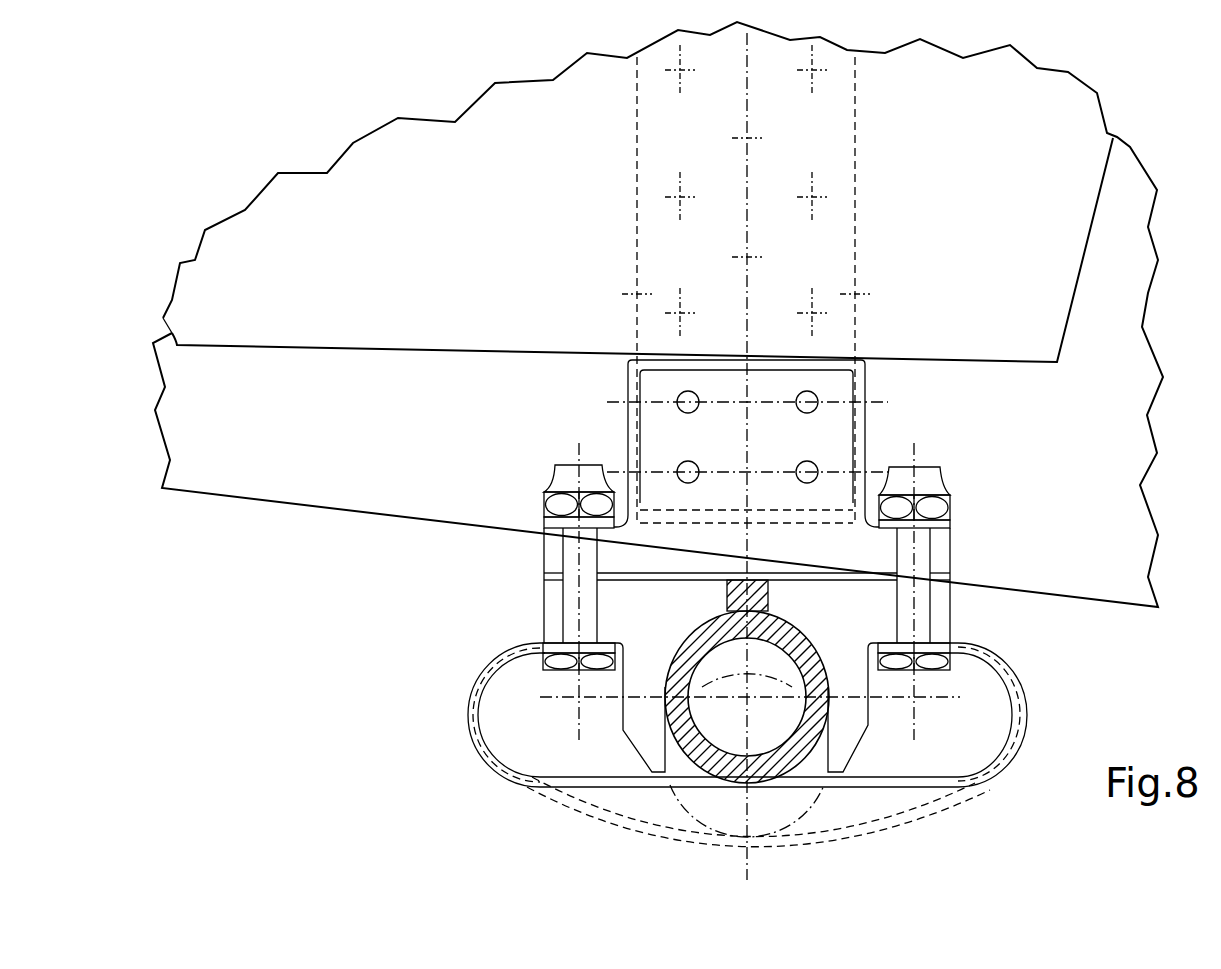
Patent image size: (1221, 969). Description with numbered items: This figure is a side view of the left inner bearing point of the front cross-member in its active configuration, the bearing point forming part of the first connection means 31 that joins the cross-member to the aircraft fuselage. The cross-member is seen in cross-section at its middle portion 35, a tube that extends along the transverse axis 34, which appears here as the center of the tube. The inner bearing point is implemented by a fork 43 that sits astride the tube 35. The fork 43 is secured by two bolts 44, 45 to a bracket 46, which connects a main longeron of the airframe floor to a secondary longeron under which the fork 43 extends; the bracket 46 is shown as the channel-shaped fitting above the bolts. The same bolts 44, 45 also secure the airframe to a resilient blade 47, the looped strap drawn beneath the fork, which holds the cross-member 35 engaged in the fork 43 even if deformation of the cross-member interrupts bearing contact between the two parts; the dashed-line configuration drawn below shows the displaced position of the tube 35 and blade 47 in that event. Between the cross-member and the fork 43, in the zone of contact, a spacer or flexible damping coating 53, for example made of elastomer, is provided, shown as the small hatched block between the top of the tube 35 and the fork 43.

The first connection means 31 is at (490, 462).
The transverse axis 34 is at (740, 695).
The middle portion of the beam 35 is at (780, 665).
The fork 43 is at (638, 730).
The bolt 44 is at (548, 671).
The bolt 45 is at (903, 671).
The bracket 46 is at (767, 555).
The resilient blade 47 is at (927, 775).
The flexible damping coating 53 is at (770, 597).